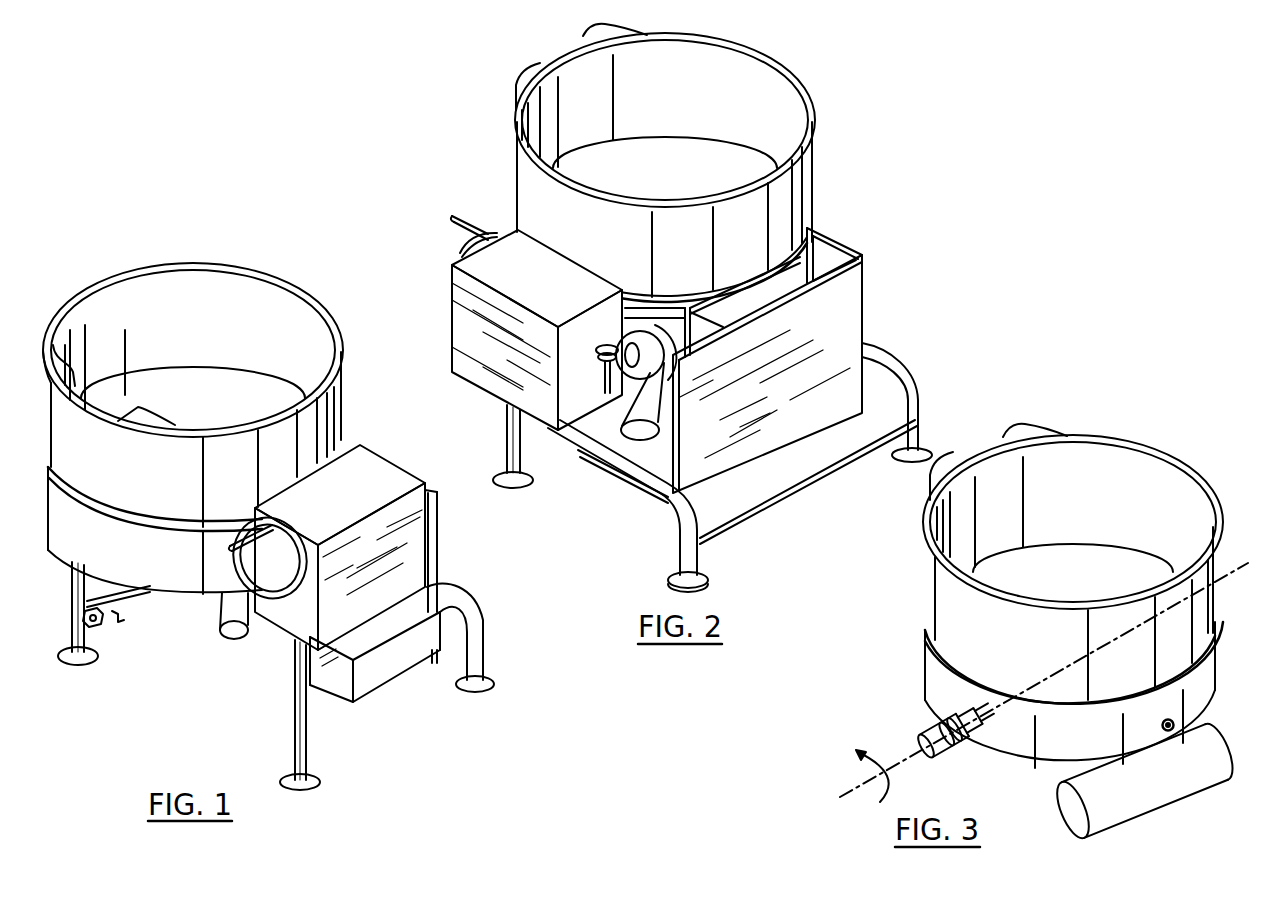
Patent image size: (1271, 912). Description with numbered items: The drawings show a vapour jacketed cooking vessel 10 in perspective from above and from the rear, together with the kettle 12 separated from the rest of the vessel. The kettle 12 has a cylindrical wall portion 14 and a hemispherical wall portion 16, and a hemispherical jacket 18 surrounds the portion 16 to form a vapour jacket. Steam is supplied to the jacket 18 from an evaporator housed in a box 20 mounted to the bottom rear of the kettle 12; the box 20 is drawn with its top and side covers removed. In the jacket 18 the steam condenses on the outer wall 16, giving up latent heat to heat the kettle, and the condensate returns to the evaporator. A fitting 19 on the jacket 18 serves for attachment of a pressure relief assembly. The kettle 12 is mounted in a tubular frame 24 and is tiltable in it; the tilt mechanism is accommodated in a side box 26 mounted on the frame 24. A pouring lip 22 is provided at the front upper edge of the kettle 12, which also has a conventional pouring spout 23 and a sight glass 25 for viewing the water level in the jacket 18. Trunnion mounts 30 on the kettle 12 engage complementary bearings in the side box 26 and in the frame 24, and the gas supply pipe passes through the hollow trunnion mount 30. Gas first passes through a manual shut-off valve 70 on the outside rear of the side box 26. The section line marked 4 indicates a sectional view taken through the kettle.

In FIG. 1, the vessel 10 is at (252, 249).
In FIG. 2, the vessel 10 is at (838, 104).
In FIG. 1, the kettle 12 is at (329, 307).
In FIG. 2, the kettle 12 is at (797, 188).
In FIG. 3, the kettle 12 is at (1170, 456).
In FIG. 1, the cylindrical wall portion 14 is at (334, 413).
In FIG. 3, the cylindrical wall portion 14 is at (1218, 578).
In FIG. 1, the hemispherical wall portion 16 is at (155, 398).
In FIG. 2, the hemispherical wall portion 16 is at (598, 182).
In FIG. 3, the hemispherical wall portion 16 is at (1062, 568).
In FIG. 1, the hemispherical jacket 18 is at (174, 582).
In FIG. 3, the hemispherical jacket 18 is at (1217, 673).
In FIG. 3, the fitting 19 is at (1175, 725).
In FIG. 1, the box 20 is at (405, 665).
In FIG. 2, the box 20 is at (865, 305).
In FIG. 1, the pouring lip 22 is at (102, 408).
In FIG. 2, the pouring lip 22 is at (567, 56).
In FIG. 3, the pouring lip 22 is at (998, 462).
In FIG. 1, the pouring spout 23 is at (100, 625).
In FIG. 1, the tubular frame 24 is at (487, 613).
In FIG. 2, the tubular frame 24 is at (810, 480).
In FIG. 1, the sight glass 25 is at (237, 639).
In FIG. 1, the side box 26 is at (418, 552).
In FIG. 2, the side box 26 is at (480, 375).
In FIG. 3, the trunnion mount 30 is at (940, 730).
In FIG. 2, the manual shut-off valve 70 is at (598, 366).
In FIG. 3, the section line 4- 4 is at (1062, 717).